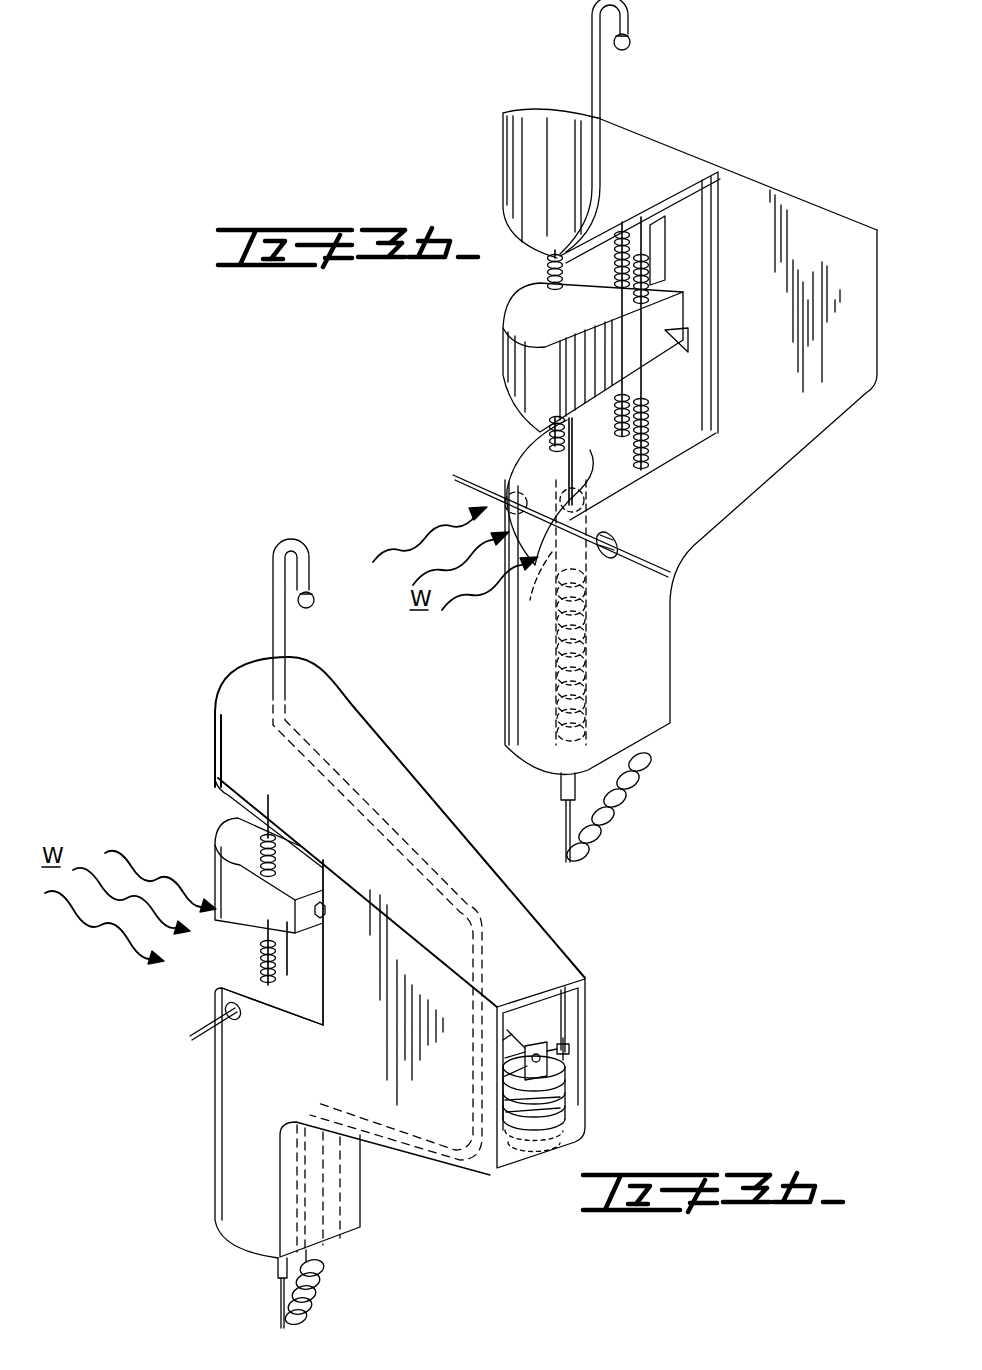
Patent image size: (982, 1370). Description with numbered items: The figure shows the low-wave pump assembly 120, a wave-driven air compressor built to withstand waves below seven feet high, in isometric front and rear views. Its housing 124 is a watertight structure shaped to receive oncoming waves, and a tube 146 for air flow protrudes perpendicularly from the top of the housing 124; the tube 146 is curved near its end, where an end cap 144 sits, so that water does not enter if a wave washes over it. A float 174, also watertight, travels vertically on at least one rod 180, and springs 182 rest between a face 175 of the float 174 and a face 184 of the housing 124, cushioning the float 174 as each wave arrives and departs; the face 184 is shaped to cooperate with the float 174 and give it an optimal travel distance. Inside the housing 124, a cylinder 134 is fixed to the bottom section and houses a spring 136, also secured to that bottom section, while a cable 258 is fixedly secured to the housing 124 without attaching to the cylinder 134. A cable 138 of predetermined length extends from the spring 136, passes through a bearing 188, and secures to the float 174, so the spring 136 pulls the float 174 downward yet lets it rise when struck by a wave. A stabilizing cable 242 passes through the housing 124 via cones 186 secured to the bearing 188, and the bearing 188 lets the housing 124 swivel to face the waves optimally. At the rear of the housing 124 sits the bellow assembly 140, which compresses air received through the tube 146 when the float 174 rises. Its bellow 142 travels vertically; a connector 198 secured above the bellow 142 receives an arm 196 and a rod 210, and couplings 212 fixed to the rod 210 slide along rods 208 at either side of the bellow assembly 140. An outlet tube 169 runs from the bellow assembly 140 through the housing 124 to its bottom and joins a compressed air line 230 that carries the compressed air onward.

In FIG. 3A, the low-wave pump assembly 120 is at (757, 183).
In FIG. 3A, the housing 124 is at (858, 381).
In FIG. 3B, the housing 124 is at (378, 1070).
In FIG. 3A, the cylinder 134 is at (598, 560).
In FIG. 3A, the spring 136 is at (584, 650).
In FIG. 3A, the cable 138 is at (552, 552).
In FIG. 3B, the bellow assembly 140 is at (578, 1093).
In FIG. 3B, the bellow 142 is at (560, 1123).
In FIG. 3A, the end cap 144 is at (630, 48).
In FIG. 3B, the end cap 144 is at (314, 607).
In FIG. 3A, the tube 146 is at (592, 38).
In FIG. 3B, the tube 146 is at (268, 590).
In FIG. 3B, the outlet tube 169 is at (430, 1135).
In FIG. 3A, the float 174 is at (583, 388).
In FIG. 3B, the float 174 is at (254, 900).
In FIG. 3A, the face 175 is at (583, 323).
In FIG. 3B, the face 175 is at (298, 872).
In FIG. 3A, the rod 180 is at (645, 400).
In FIG. 3B, the rod 180 is at (262, 828).
In FIG. 3A, the springs 182 is at (650, 296).
In FIG. 3B, the springs 182 is at (258, 848).
In FIG. 3A, the face 184 is at (615, 481).
In FIG. 3B, the face 184 is at (310, 990).
In FIG. 3A, the cones 186 is at (600, 528).
In FIG. 3A, the bearing 188 is at (530, 472).
In FIG. 3B, the arm 196 is at (525, 1000).
In FIG. 3B, the connector 198 is at (537, 1046).
In FIG. 3B, the rods 208 is at (570, 1008).
In FIG. 3B, the rod 210 is at (571, 1045).
In FIG. 3B, the couplings 212 is at (575, 1055).
In FIG. 3A, the compressed air line 230 is at (620, 795).
In FIG. 3B, the compressed air line 230 is at (318, 1302).
In FIG. 3A, the cable 242 is at (660, 572).
In FIG. 3B, the cable 242 is at (190, 1038).
In FIG. 3A, the cable 258 is at (562, 835).
In FIG. 3B, the cable 258 is at (281, 1300).